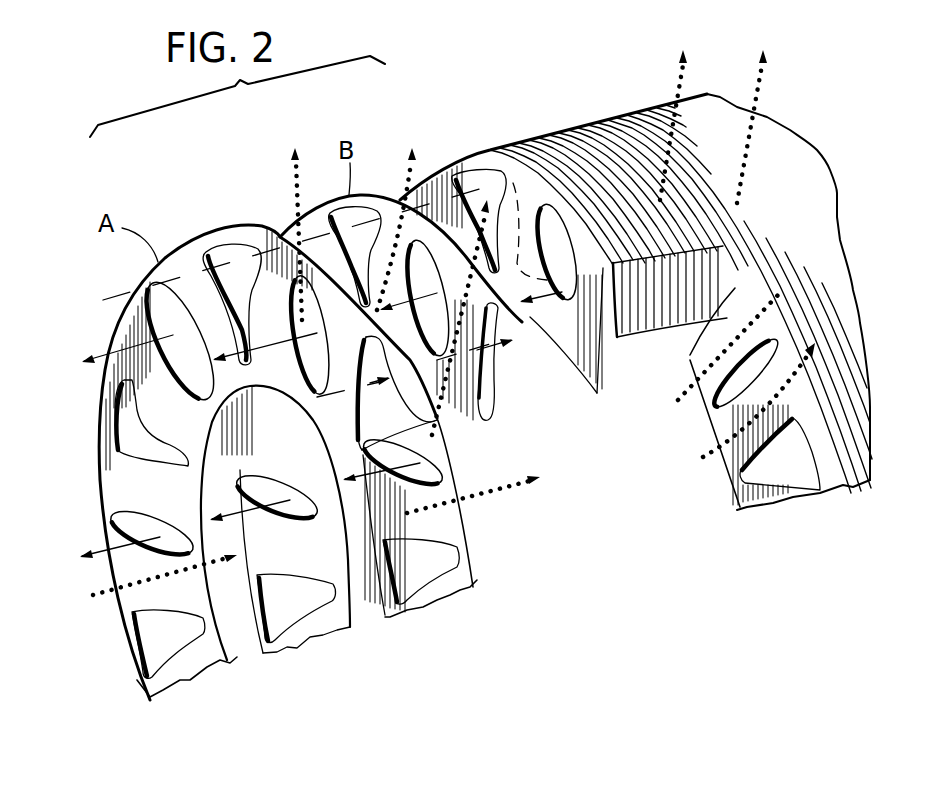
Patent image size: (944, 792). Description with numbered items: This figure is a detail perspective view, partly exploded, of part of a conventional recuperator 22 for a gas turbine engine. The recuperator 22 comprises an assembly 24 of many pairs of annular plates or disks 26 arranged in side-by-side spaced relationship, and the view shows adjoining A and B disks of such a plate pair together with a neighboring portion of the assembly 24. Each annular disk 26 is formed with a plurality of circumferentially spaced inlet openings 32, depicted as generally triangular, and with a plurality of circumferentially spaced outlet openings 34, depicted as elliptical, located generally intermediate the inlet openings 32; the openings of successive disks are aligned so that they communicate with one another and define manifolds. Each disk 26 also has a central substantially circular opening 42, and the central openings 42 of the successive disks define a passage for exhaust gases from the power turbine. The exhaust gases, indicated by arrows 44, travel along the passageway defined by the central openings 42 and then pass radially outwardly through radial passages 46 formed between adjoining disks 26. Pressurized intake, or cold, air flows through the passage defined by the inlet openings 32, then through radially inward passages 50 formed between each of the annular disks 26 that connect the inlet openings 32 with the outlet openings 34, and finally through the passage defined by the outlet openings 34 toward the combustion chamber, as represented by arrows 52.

The recuperator 22 is at (470, 112).
The assembly 24 is at (596, 122).
The annular plates or disks 26 is at (280, 233).
The inlet openings 32 is at (457, 178).
The outlet openings 34 is at (125, 513).
The central substantially circular opening 42 is at (237, 657).
The arrows indicating exhaust gases 44 is at (503, 480).
The radial passages 46 is at (817, 413).
The radially inward passages 50 is at (612, 258).
The arrows representing air flow to the combustion chamber 52 is at (150, 331).